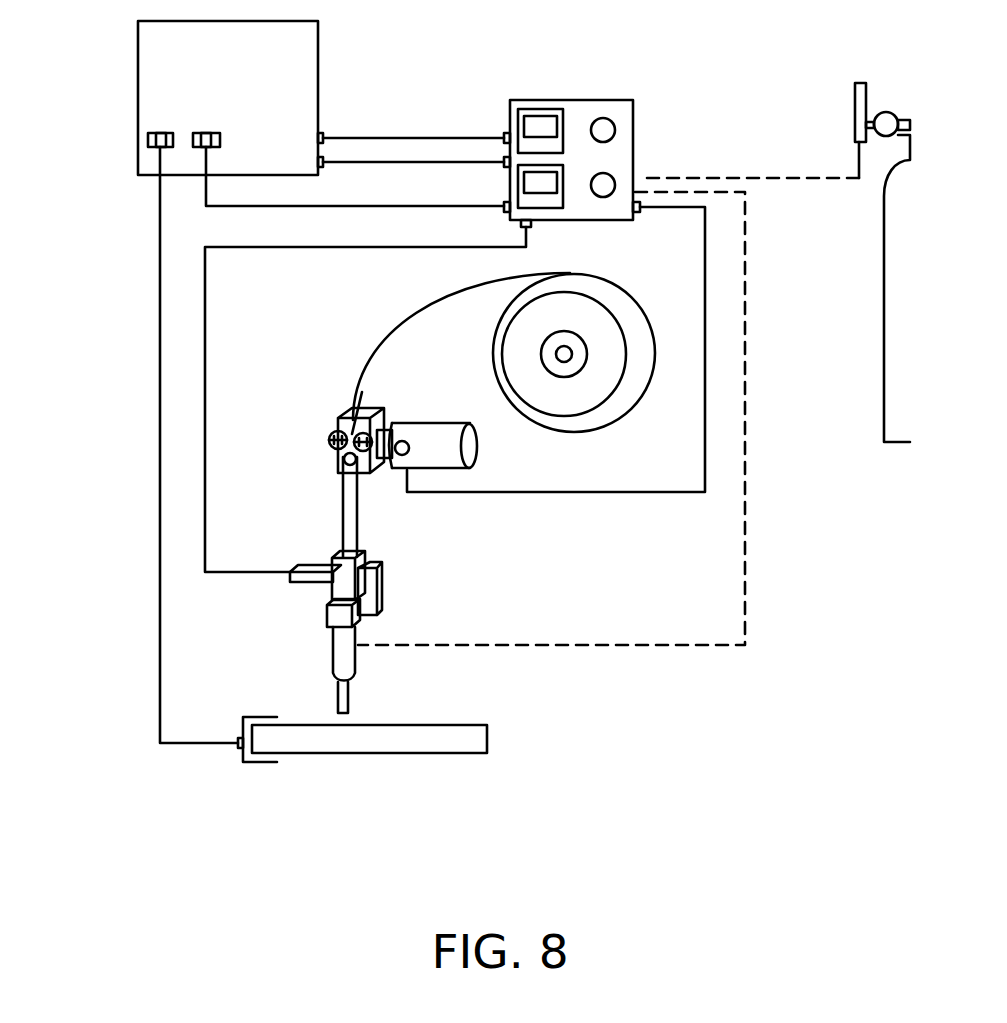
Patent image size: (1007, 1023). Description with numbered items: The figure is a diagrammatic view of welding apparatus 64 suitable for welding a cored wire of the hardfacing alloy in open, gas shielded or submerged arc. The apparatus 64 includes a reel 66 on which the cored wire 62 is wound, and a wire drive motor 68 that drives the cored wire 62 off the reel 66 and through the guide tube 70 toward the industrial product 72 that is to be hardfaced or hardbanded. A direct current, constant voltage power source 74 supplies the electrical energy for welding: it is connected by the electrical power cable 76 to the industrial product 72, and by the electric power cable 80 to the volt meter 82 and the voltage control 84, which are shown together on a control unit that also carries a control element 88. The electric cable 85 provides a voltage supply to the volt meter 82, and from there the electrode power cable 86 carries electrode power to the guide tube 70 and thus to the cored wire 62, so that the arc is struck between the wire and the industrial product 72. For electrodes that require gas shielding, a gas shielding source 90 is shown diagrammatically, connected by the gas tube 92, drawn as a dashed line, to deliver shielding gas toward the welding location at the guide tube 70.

The cored wire 62 is at (410, 323).
The apparatus 64 is at (665, 466).
The reel 66 is at (632, 372).
The wire drive motor 68 is at (470, 450).
The guide tube 70 is at (358, 521).
The industrial product 72 is at (348, 755).
The power source 74 is at (138, 108).
The electrical power cable 76 is at (158, 593).
The electric power cable 80 is at (410, 137).
The volt meter 82 is at (543, 115).
The voltage control 84 is at (615, 132).
The electric cable 85 is at (387, 163).
The electrode power cable 86 is at (205, 432).
The switch 88 is at (607, 188).
The gas shielding source 90 is at (898, 380).
The gas tube 92 is at (740, 178).